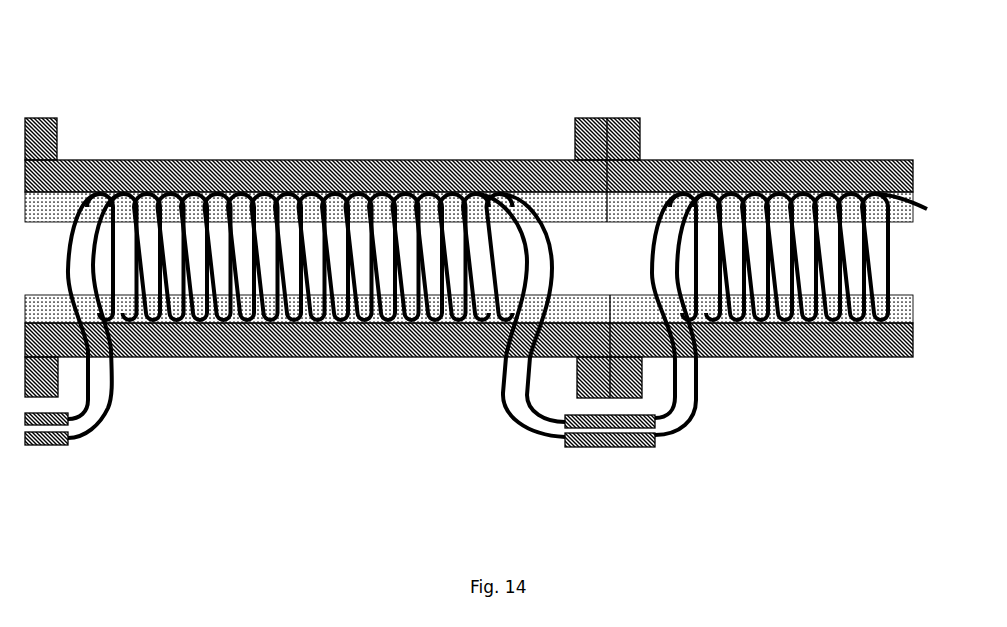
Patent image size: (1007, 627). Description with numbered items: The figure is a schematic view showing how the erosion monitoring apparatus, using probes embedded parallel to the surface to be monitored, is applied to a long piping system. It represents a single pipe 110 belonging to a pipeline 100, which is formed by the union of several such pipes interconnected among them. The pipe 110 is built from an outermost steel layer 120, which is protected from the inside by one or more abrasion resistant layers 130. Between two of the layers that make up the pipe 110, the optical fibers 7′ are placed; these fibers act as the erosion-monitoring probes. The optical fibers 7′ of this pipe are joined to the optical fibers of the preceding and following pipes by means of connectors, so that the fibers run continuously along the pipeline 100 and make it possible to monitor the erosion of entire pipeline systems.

The pipeline 100 is at (891, 146).
The pipe 110 is at (253, 158).
The outermost steel layer 120 is at (362, 177).
The abrasion resistant layer 130 is at (560, 205).
The optical fibers 7′ is at (113, 380).